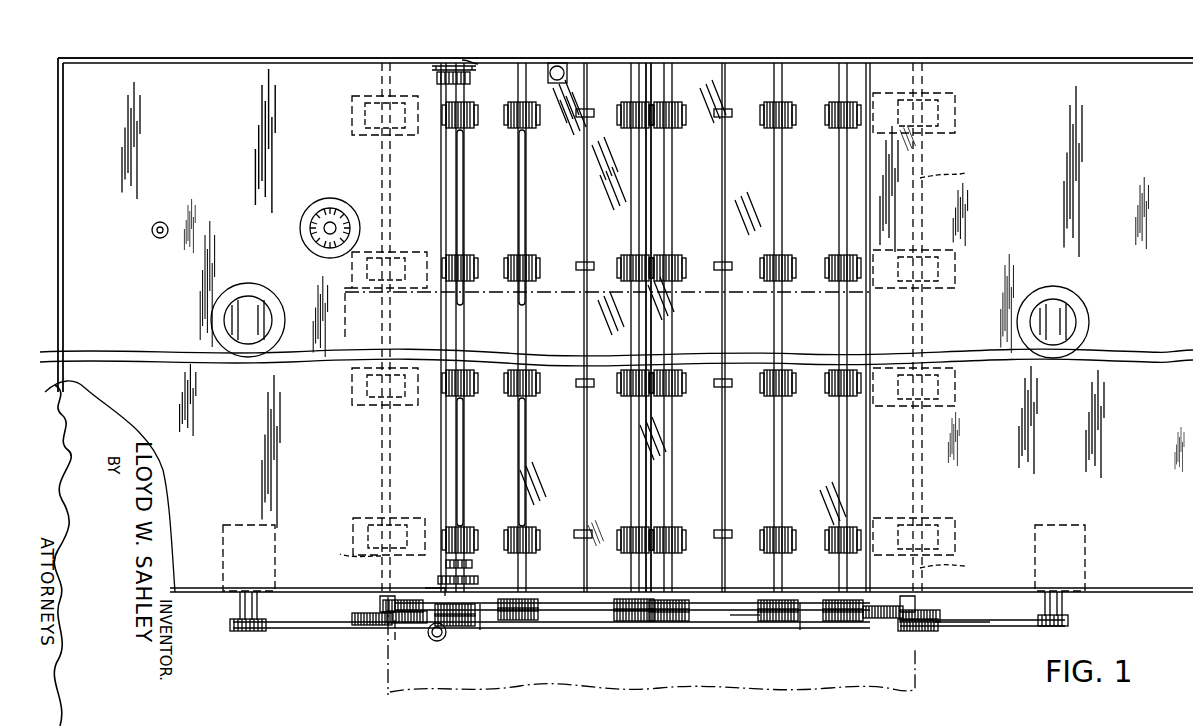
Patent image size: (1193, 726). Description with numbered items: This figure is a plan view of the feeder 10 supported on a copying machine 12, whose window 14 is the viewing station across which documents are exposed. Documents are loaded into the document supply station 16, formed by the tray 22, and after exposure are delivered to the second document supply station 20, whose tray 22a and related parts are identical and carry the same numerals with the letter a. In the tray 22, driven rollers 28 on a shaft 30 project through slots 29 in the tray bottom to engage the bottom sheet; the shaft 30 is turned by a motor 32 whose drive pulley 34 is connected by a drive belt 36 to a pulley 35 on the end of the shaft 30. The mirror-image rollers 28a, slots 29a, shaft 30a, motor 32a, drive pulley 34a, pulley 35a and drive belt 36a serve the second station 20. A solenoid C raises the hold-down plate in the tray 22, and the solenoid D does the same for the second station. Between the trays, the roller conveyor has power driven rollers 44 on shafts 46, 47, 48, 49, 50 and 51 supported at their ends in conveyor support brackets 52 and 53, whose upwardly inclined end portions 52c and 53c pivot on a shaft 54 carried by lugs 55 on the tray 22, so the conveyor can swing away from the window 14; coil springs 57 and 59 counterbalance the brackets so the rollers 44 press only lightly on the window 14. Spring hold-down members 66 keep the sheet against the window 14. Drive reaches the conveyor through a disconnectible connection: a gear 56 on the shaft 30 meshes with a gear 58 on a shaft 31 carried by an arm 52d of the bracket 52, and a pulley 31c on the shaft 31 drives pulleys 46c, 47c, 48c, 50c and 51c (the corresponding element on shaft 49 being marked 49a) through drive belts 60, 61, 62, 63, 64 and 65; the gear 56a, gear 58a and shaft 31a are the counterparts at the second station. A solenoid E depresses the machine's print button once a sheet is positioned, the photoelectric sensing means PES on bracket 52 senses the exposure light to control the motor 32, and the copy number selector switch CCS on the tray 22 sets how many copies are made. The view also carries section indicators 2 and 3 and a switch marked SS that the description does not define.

The feeder 10 is at (690, 54).
The copying machine 12 is at (916, 654).
The window 14 is at (752, 78).
The document supply station 16 is at (274, 56).
The second document supply station 20 is at (1100, 57).
The tray 22 is at (135, 75).
The tray 22a is at (1052, 74).
The driven rollers 28 is at (357, 130).
The driven rollers 28a is at (940, 126).
The slots 29 is at (365, 112).
The slots 29a is at (950, 104).
The shaft 30 is at (349, 427).
The shaft 30a is at (959, 370).
The shaft 31 is at (430, 590).
The shaft 31a is at (902, 600).
The pulley 31c is at (385, 604).
The motor 32 is at (240, 556).
The motor 32a is at (1062, 545).
The drive pulley 34 is at (240, 632).
The drive pulley 34a is at (1066, 628).
The pulley 35 is at (390, 628).
The pulley 35a is at (915, 632).
The drive belt 36 is at (292, 629).
The drive belt 36a is at (990, 627).
The power driven rollers 44 is at (476, 262).
The shaft 46 is at (465, 200).
The pulley 46c is at (458, 618).
The shaft 47 is at (527, 200).
The pulley 47c is at (535, 622).
The shaft 48 is at (635, 200).
The pulley 48c is at (640, 624).
The shaft 49 is at (673, 200).
The shaft end 49a is at (744, 616).
The shaft 50 is at (776, 200).
The pulley 50c is at (780, 622).
The shaft 51 is at (841, 200).
The pulley 51c is at (848, 622).
The conveyor support bracket 52 is at (632, 580).
The upwardly inclined end portion 52c is at (452, 578).
The arm 52d is at (447, 560).
The conveyor support bracket 53 is at (568, 50).
The upwardly inclined end portion 53c is at (470, 62).
The shaft 54 is at (463, 150).
The lugs 55 is at (470, 82).
The gear 56 is at (362, 628).
The gear 56a is at (932, 620).
The coil spring 57 is at (482, 634).
The gear 58 is at (383, 606).
The gear 58a is at (884, 620).
The coil spring 59 is at (446, 54).
The drive belt 60 is at (395, 645).
The drive belt 61 is at (498, 626).
The drive belt 62 is at (614, 620).
The drive belt 63 is at (676, 622).
The drive belt 64 is at (762, 622).
The drive belt 65 is at (801, 632).
The sheet hold-down members 66 is at (578, 268).
The section line 2 is at (43, 345).
The section line 3 is at (455, 633).
The solenoid C is at (280, 312).
The copy number selector switch CCS is at (302, 232).
The solenoid D is at (1068, 308).
The solenoid E is at (437, 642).
The photoelectric sensing means PES is at (567, 70).
The start switch SS is at (172, 208).